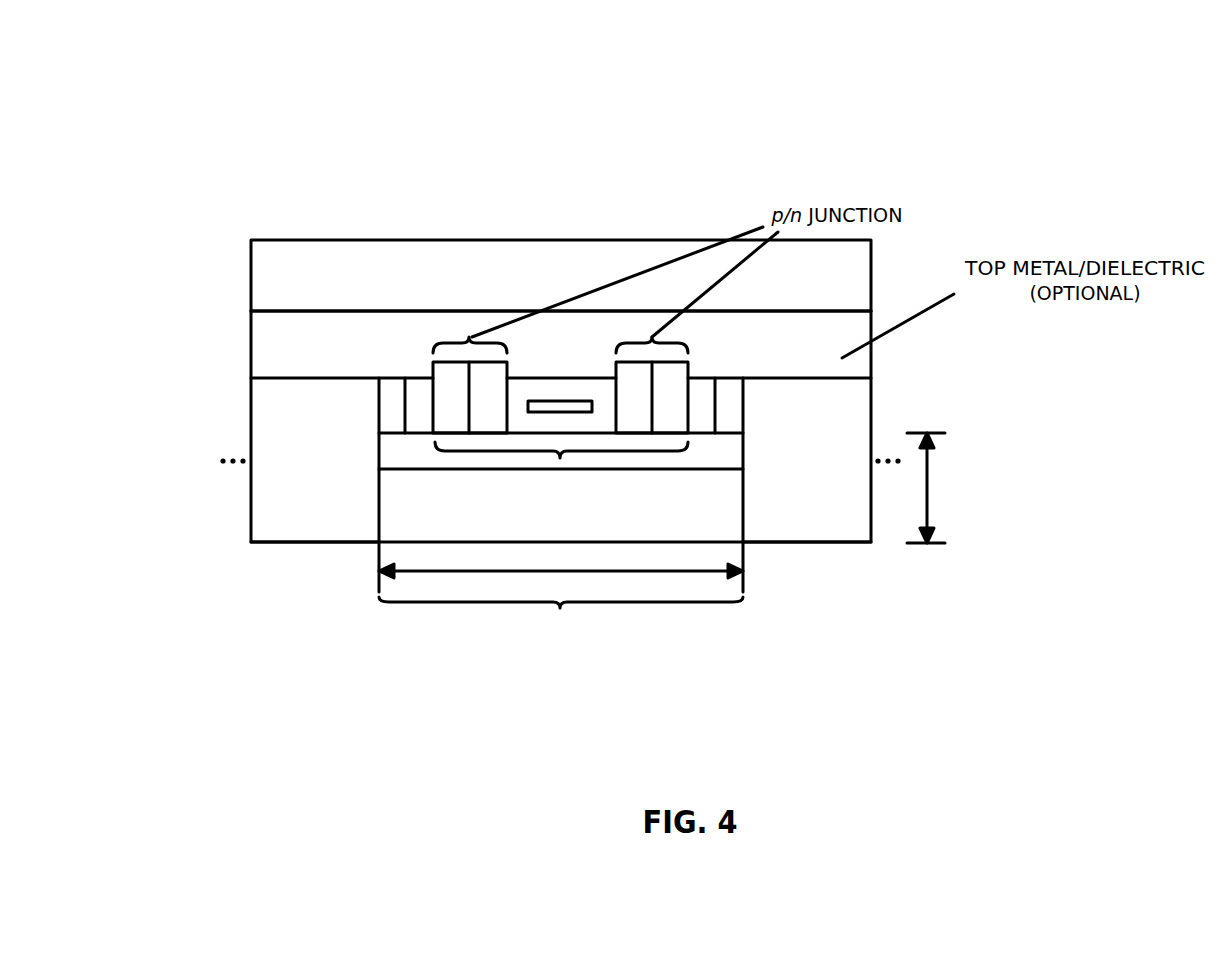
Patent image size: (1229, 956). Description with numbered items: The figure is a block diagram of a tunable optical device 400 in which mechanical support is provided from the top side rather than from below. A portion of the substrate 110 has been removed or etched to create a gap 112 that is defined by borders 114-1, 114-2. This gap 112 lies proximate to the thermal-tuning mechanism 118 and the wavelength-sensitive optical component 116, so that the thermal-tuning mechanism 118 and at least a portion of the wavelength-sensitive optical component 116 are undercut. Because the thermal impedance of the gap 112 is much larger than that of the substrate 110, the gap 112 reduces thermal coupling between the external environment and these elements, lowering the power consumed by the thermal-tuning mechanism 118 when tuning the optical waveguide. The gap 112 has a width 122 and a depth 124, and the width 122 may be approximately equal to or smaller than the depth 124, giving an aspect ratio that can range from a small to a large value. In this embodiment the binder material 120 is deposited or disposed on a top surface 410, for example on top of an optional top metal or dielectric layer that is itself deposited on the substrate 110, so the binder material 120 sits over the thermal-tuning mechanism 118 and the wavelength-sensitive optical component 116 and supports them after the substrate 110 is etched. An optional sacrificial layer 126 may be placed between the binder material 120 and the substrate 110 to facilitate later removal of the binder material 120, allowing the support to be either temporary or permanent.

The tunable optical device 400 is at (948, 113).
The binder material 120 is at (561, 281).
The top surface 410 is at (817, 312).
The substrate 110 is at (318, 407).
The border 114-1 is at (379, 488).
The border 114-2 is at (743, 487).
The sacrificial layer 126 is at (697, 450).
The wavelength-sensitive optical component 116 is at (562, 458).
The thermal-tuning mechanism 118 is at (550, 413).
The gap 112 is at (560, 608).
The width 122 is at (589, 571).
The depth 124 is at (927, 507).